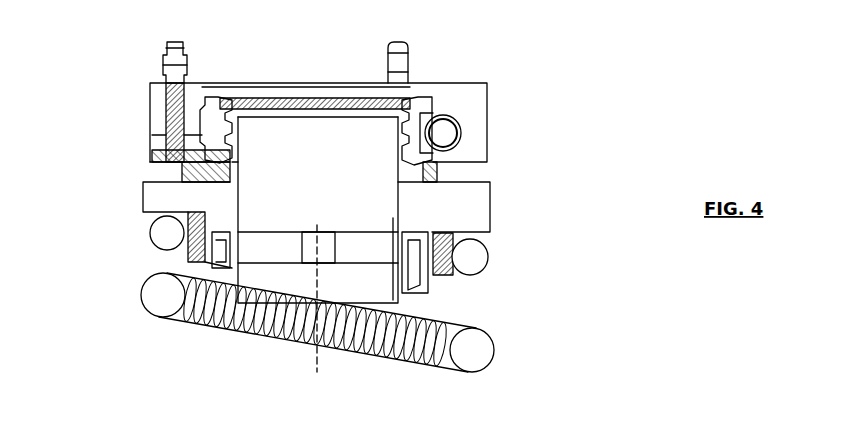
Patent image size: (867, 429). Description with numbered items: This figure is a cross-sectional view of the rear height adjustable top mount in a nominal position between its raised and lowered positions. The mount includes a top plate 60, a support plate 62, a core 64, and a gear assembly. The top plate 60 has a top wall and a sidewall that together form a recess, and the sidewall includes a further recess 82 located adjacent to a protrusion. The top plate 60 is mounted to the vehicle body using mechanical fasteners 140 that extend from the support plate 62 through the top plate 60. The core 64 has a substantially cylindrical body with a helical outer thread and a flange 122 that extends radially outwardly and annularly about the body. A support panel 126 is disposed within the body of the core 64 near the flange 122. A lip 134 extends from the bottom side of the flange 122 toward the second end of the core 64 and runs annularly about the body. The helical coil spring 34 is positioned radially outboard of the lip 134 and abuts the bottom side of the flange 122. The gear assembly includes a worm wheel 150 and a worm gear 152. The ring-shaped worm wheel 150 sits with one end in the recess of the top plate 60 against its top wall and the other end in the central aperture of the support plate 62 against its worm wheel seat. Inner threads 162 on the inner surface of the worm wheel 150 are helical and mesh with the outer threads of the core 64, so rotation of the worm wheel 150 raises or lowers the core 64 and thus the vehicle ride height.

The helical coil spring 34 is at (279, 330).
The top plate 60 is at (454, 97).
The support plate 62 is at (157, 148).
The core 64 is at (168, 193).
The recess 82 is at (452, 114).
The flange 122 is at (465, 213).
The support panel 126 is at (265, 257).
The lip 134 is at (428, 278).
The mechanical fasteners 140 is at (170, 62).
The worm wheel 150 is at (212, 98).
The worm gear 152 is at (440, 136).
The inner threads 162 is at (333, 104).